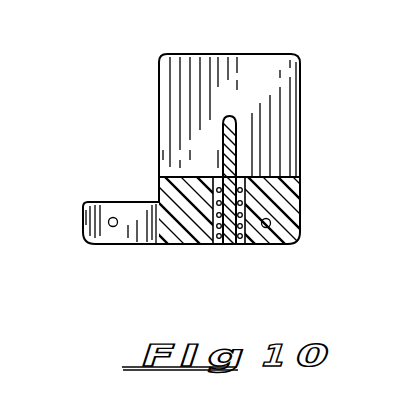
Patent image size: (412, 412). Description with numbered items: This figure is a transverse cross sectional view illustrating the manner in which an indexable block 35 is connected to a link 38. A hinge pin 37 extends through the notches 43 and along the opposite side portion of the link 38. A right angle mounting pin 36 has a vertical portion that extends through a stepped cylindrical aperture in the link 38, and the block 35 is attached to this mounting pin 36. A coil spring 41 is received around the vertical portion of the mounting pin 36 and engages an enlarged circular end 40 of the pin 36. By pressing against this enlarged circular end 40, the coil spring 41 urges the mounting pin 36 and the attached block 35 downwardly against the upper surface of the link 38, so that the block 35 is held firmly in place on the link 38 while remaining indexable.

The block 35 is at (297, 58).
The right angle mounting pin 36 is at (237, 122).
The hinge pin 37 is at (111, 227).
The link 38 is at (296, 198).
The enlarged circular end 40 is at (226, 245).
The coil spring 41 is at (268, 245).
The notches 43 is at (108, 208).